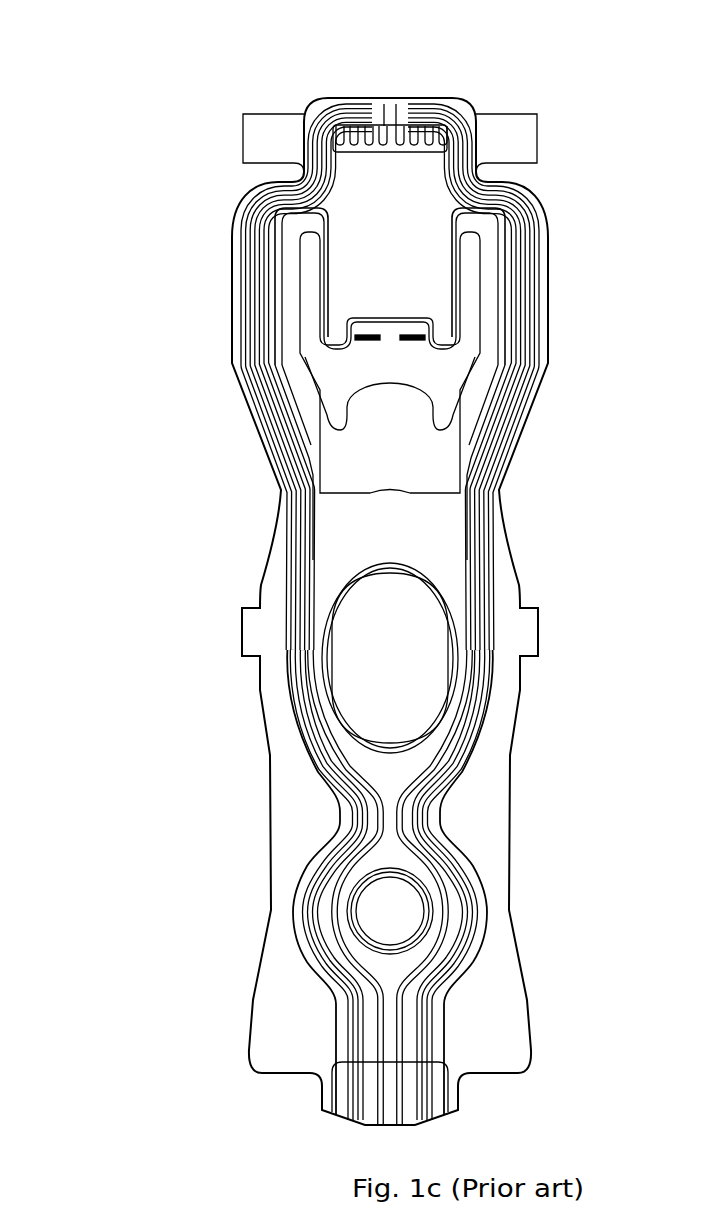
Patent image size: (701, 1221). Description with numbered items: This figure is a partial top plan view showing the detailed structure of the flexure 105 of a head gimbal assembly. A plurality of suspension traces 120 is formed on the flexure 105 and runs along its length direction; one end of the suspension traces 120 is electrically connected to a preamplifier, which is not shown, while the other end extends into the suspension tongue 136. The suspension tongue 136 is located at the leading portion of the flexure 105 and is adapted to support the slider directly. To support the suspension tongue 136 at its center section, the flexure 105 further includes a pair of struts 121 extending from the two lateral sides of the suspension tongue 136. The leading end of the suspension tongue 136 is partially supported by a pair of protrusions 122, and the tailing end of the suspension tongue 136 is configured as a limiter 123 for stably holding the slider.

The flexure 105 is at (78, 44).
The suspension traces 120 is at (258, 362).
The struts 121 is at (237, 250).
The protrusions 122 is at (262, 138).
The limiter 123 is at (390, 332).
The suspension tongue 136 is at (382, 238).